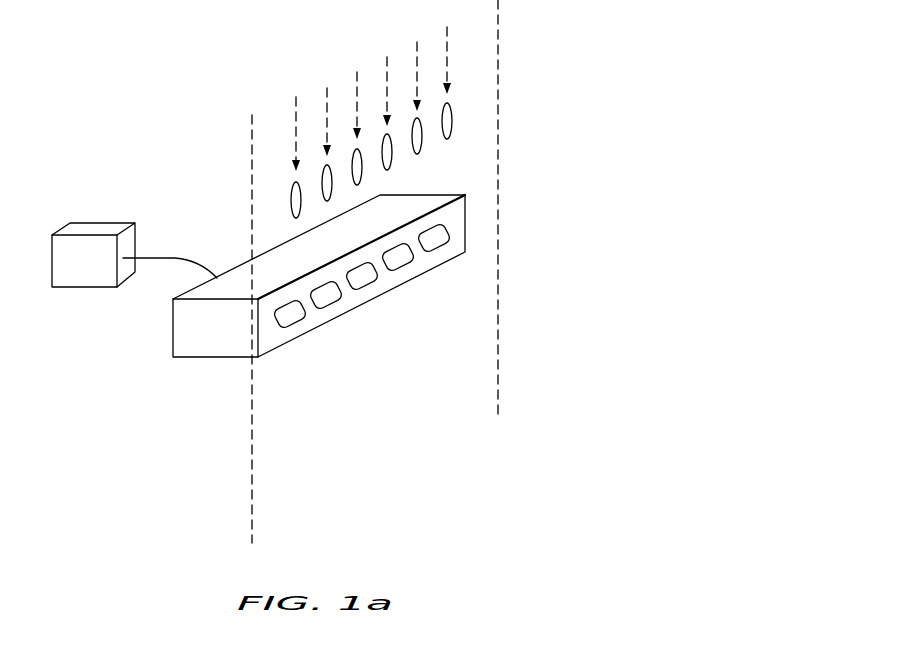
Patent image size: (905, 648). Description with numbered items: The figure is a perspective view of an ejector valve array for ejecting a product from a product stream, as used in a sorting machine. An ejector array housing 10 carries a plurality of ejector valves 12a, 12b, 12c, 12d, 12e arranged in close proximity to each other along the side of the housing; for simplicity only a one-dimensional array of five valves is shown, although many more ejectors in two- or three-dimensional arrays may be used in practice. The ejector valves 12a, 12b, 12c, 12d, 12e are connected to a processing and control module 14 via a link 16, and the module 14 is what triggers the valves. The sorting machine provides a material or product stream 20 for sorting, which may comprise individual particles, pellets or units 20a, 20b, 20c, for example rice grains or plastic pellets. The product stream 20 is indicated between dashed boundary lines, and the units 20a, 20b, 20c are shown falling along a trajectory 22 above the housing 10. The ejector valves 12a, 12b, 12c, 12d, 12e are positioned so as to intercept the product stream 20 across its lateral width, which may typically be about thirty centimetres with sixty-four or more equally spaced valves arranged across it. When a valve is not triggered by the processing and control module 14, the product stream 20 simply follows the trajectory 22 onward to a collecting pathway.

The ejector array housing 10 is at (198, 359).
The ejector valve 12a is at (300, 327).
The ejector valve 12b is at (335, 308).
The ejector valve 12c is at (370, 288).
The ejector valve 12d is at (407, 268).
The ejector valve 12e is at (443, 248).
The processing and control module 14 is at (77, 288).
The link 16 is at (183, 256).
The product stream 20 is at (498, 10).
The unit 20a is at (452, 119).
The unit 20b is at (422, 135).
The unit 20c is at (392, 153).
The trajectory 22 is at (295, 97).